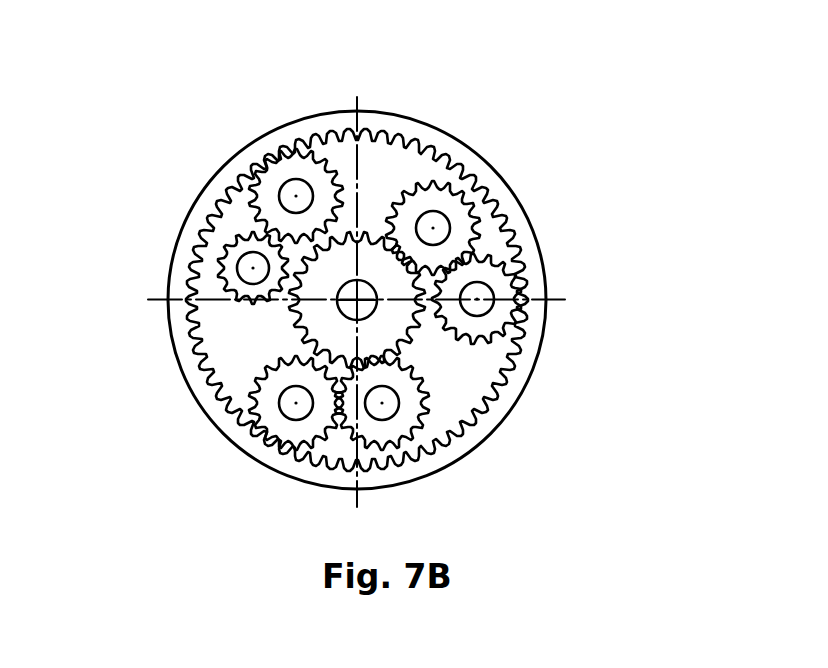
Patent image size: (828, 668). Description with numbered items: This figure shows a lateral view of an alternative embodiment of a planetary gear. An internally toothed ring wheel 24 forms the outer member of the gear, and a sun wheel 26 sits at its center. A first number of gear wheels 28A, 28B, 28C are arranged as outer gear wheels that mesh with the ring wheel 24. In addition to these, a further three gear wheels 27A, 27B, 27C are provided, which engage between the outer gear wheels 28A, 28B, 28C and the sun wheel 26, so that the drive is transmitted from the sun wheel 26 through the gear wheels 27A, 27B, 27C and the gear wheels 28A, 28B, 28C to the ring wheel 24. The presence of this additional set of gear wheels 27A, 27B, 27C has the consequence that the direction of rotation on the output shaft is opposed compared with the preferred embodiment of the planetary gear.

The ring wheel 24 is at (182, 367).
The sun wheel 26 is at (377, 257).
The gear wheel 27A is at (223, 258).
The gear wheel 27B is at (455, 208).
The gear wheel 27C is at (423, 412).
The gear wheel 28A is at (270, 182).
The gear wheel 28B is at (513, 297).
The gear wheel 28C is at (272, 418).